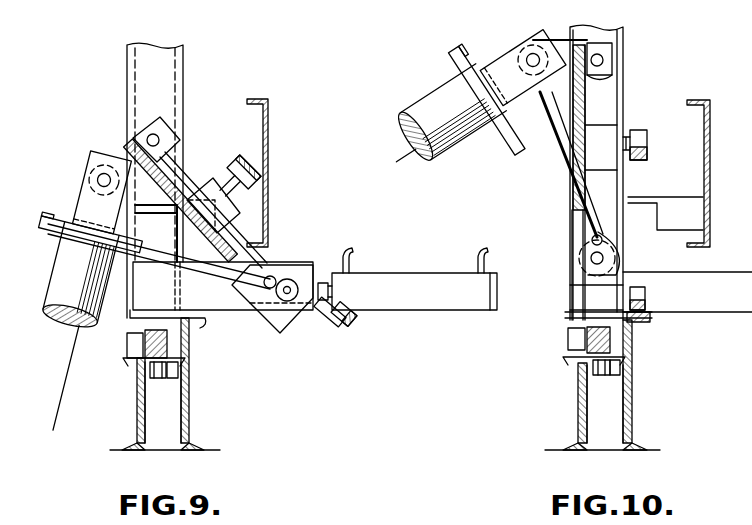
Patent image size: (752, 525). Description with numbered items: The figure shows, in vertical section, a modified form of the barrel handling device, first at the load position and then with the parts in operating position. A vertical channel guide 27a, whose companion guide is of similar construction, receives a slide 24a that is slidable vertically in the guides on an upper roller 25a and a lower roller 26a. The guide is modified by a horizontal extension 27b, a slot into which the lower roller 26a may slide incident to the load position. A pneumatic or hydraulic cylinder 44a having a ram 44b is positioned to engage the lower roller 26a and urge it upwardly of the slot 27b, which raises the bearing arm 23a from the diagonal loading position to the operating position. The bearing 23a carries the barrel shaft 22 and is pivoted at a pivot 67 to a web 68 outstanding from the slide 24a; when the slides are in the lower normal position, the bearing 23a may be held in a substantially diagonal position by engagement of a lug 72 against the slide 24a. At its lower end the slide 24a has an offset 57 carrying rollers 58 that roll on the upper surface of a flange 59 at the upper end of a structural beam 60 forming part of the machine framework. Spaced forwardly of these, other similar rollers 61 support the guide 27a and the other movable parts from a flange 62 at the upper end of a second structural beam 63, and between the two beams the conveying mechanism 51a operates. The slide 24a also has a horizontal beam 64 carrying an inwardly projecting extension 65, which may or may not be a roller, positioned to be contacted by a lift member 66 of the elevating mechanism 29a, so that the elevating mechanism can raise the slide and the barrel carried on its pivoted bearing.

In FIG. 9, the shaft 22 is at (170, 257).
In FIG. 9, the bearing 23a is at (63, 290).
In FIG. 10, the bearing 23a is at (452, 158).
In FIG. 9, the slide 24a is at (182, 182).
In FIG. 10, the slide 24a is at (585, 115).
In FIG. 9, the roller 25a is at (137, 132).
In FIG. 10, the roller 25a is at (598, 42).
In FIG. 9, the roller 26a is at (291, 278).
In FIG. 10, the roller 26a is at (590, 252).
In FIG. 9, the vertical channel guide 27a is at (184, 104).
In FIG. 9, the horizontal extension 27b is at (235, 305).
In FIG. 9, the elevating mechanism 29a is at (270, 170).
In FIG. 10, the elevating mechanism 29a is at (712, 147).
In FIG. 9, the cylinder 44a is at (413, 297).
In FIG. 9, the ram 44b is at (320, 282).
In FIG. 9, the conveying mechanism 51a is at (163, 375).
In FIG. 10, the conveying mechanism 51a is at (615, 367).
In FIG. 9, the offset 57 is at (292, 325).
In FIG. 9, the roller 58 is at (350, 327).
In FIG. 10, the roller 58 is at (638, 297).
In FIG. 9, the flange 59 is at (200, 325).
In FIG. 10, the flange 59 is at (637, 320).
In FIG. 9, the structural beam 60 is at (187, 402).
In FIG. 10, the structural beam 60 is at (602, 385).
In FIG. 9, the roller 61 is at (128, 342).
In FIG. 10, the roller 61 is at (568, 338).
In FIG. 9, the flange 62 is at (138, 364).
In FIG. 10, the flange 62 is at (594, 366).
In FIG. 9, the structural beam 63 is at (137, 420).
In FIG. 9, the horizontal beam 64 is at (227, 217).
In FIG. 9, the extension 65 is at (238, 160).
In FIG. 10, the extension 65 is at (647, 115).
In FIG. 10, the lift member 66 is at (657, 197).
In FIG. 9, the pivot 67 is at (104, 172).
In FIG. 10, the pivot 67 is at (534, 54).
In FIG. 10, the web 68 is at (555, 40).
In FIG. 9, the lug 72 is at (203, 257).
In FIG. 10, the lug 72 is at (556, 170).